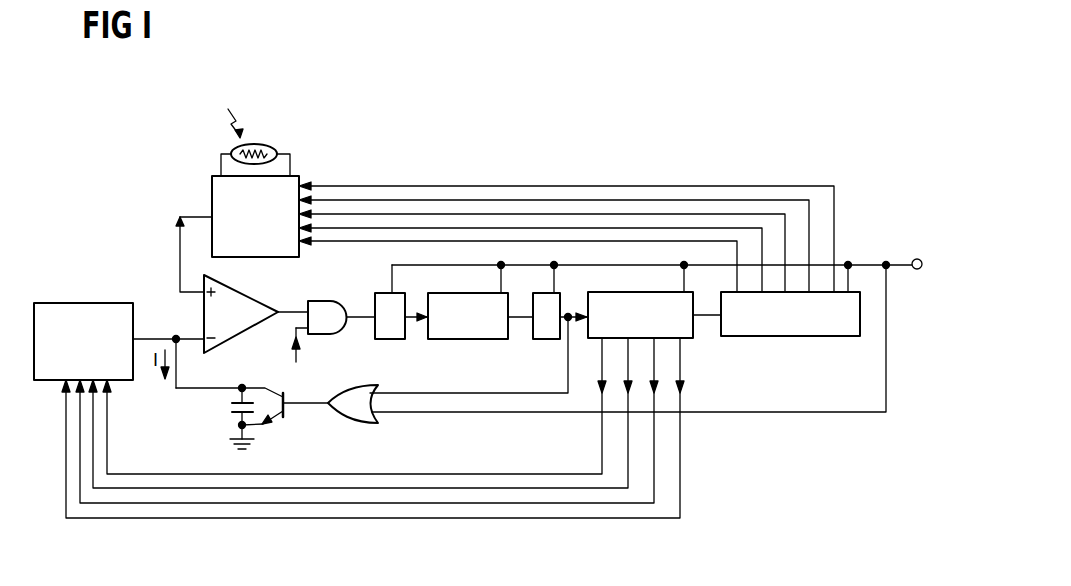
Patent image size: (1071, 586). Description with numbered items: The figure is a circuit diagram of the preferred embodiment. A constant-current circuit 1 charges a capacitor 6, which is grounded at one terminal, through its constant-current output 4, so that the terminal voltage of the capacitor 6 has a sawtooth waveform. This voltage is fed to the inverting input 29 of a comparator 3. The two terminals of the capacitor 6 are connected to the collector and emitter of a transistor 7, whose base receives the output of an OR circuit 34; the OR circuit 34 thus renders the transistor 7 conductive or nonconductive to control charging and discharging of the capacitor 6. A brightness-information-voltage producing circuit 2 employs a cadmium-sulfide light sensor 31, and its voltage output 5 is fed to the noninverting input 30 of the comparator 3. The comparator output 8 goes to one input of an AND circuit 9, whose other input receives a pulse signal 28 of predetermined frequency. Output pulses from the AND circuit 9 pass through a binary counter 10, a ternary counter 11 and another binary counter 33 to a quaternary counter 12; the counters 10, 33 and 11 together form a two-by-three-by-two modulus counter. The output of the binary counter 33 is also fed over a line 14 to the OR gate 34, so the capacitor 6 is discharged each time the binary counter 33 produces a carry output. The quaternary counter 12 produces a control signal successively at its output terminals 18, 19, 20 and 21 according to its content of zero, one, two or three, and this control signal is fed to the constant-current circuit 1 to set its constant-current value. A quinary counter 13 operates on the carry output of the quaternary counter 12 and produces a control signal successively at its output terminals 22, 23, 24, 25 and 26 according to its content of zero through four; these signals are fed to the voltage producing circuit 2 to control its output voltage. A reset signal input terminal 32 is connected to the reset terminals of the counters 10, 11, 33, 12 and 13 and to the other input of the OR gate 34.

The constant-current circuit 1 is at (109, 303).
The brightness-information-voltage producing circuit 2 is at (292, 176).
The comparator 3 is at (243, 292).
The constant-current output 4 is at (157, 337).
The voltage output 5 is at (194, 213).
The capacitor 6 is at (232, 419).
The transistor 7 is at (290, 396).
The comparator output 8 is at (302, 302).
The AND circuit 9 is at (325, 301).
The binary counter 10 is at (378, 291).
The ternary counter 11 is at (439, 292).
The quaternary counter 12 is at (602, 291).
The quinary counter 13 is at (752, 337).
The feedback line 14 is at (508, 394).
The output terminal 18 is at (599, 345).
The output terminal 19 is at (626, 345).
The output terminal 20 is at (652, 345).
The output terminal 21 is at (678, 345).
The output terminal 22 is at (737, 284).
The output terminal 23 is at (763, 284).
The output terminal 24 is at (786, 284).
The output terminal 25 is at (810, 284).
The output terminal 26 is at (835, 284).
The pulse signal 28 is at (296, 357).
The inverting input 29 is at (190, 337).
The noninverting input 30 is at (178, 288).
The cadmium-sulfide light sensor 31 is at (261, 123).
The reset signal input terminal 32 is at (916, 269).
The binary counter 33 is at (540, 292).
The OR circuit 34 is at (338, 424).